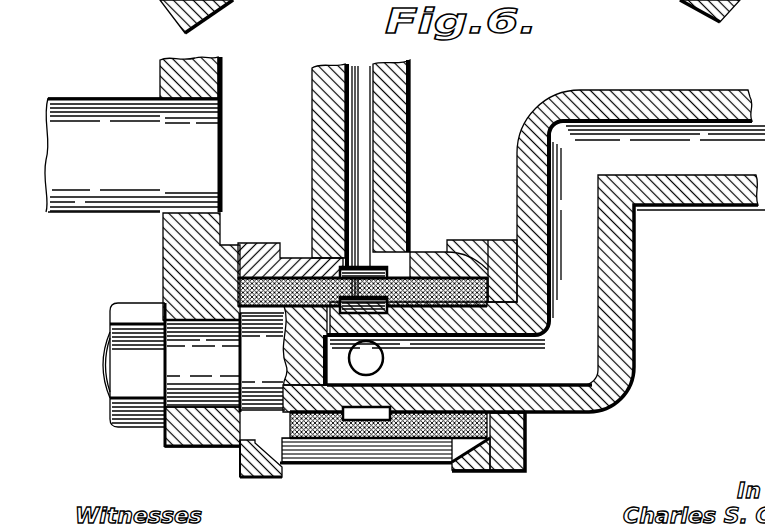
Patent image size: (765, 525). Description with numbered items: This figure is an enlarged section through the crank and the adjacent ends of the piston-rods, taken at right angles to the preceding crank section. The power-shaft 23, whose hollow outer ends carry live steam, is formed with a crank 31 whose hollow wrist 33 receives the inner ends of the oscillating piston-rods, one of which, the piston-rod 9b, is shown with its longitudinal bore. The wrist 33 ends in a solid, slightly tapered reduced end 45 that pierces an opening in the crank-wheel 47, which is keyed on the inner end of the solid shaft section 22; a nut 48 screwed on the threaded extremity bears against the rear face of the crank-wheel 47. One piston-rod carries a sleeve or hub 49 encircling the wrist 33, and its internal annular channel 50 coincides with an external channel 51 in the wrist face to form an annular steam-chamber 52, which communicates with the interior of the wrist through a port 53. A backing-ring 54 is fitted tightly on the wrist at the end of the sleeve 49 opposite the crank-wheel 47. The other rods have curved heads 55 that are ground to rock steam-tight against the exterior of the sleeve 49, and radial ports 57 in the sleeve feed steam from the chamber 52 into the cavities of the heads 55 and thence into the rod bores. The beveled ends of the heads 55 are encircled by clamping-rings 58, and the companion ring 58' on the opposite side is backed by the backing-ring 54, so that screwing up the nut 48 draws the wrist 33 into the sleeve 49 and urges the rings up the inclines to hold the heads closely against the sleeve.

The solid section of the power-shaft 22 is at (131, 155).
The crank-wheel 47 is at (205, 76).
The reduced end of the wrist 45 is at (202, 363).
The nut 48 is at (129, 312).
The wrist 33 is at (262, 362).
The clamping-rings 58 is at (290, 248).
The piston-rod 9b is at (398, 108).
The radial ports 57 is at (386, 262).
The curved heads 55 is at (430, 247).
The power-shaft 23 is at (566, 94).
The crank 31 is at (637, 315).
The port 53 is at (393, 373).
The external channel 51 is at (395, 341).
The sleeve or hub 49 is at (440, 429).
The internal annular channel 50 is at (360, 424).
The annular steam-chamber 52 is at (377, 422).
The backing-ring 54 is at (527, 448).
The clamp wedge 58' is at (375, 477).